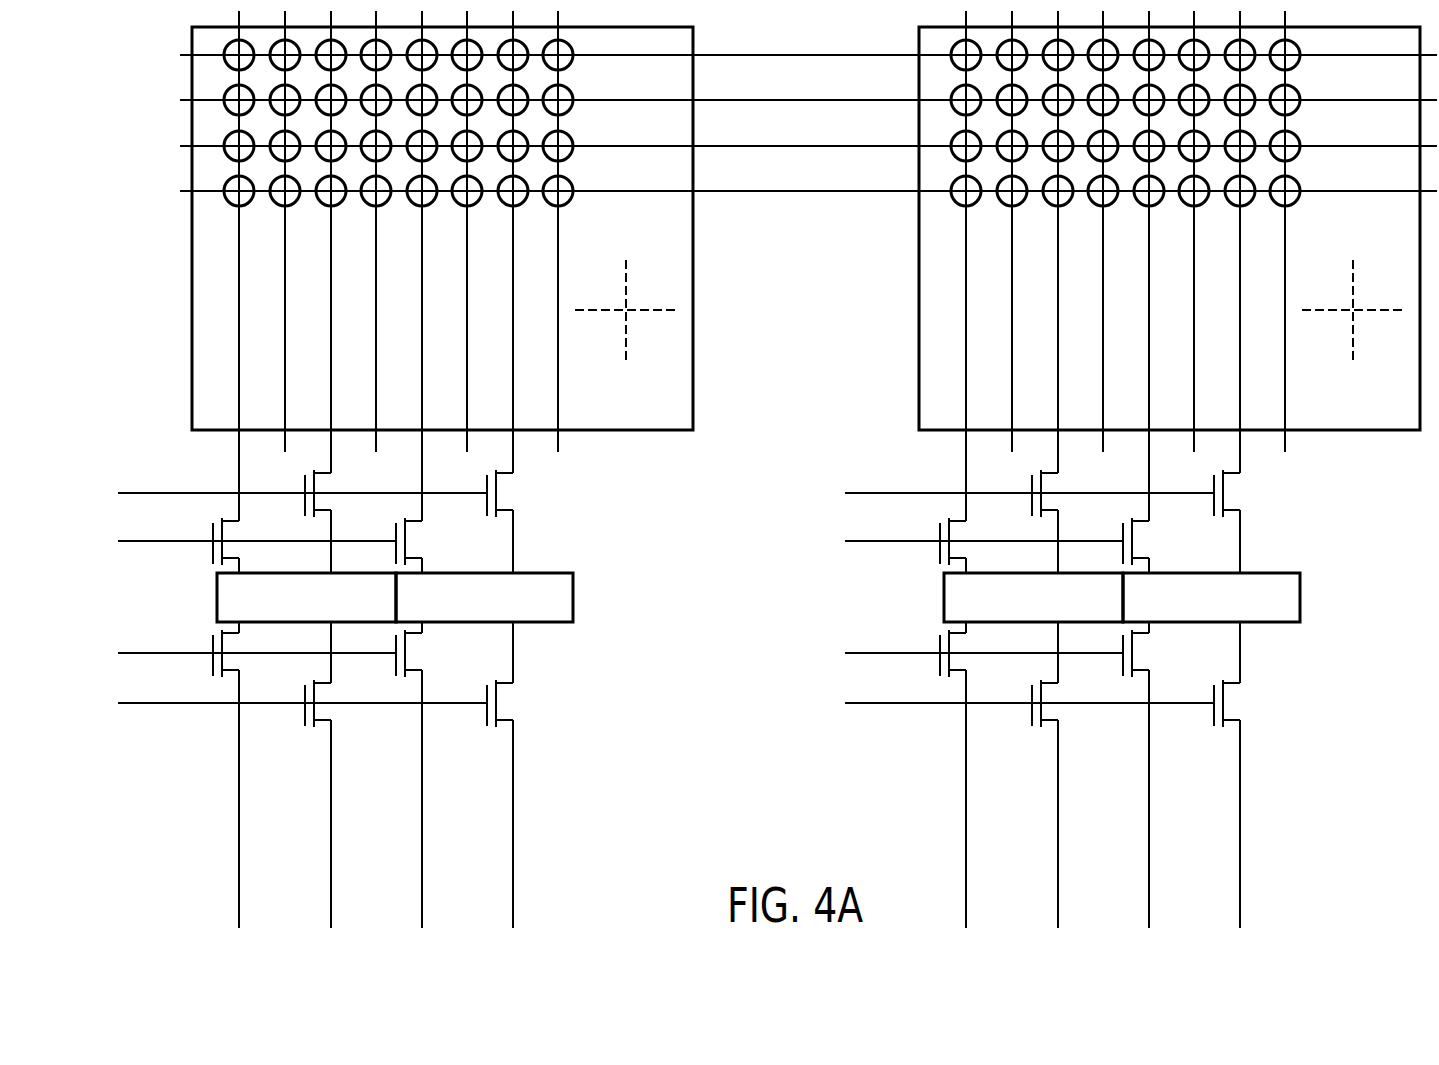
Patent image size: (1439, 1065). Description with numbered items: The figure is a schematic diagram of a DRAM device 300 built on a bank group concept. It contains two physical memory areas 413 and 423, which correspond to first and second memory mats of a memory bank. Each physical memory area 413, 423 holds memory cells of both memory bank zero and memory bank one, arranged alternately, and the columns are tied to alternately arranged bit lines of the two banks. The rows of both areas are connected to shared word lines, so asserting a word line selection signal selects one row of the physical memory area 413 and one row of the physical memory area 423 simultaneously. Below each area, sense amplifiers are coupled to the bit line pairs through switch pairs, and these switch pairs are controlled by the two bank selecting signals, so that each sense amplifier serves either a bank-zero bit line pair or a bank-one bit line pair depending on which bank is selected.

The DRAM device 300 is at (1423, 890).
The physical memory area 413 is at (640, 430).
The physical memory area 423 is at (1367, 430).